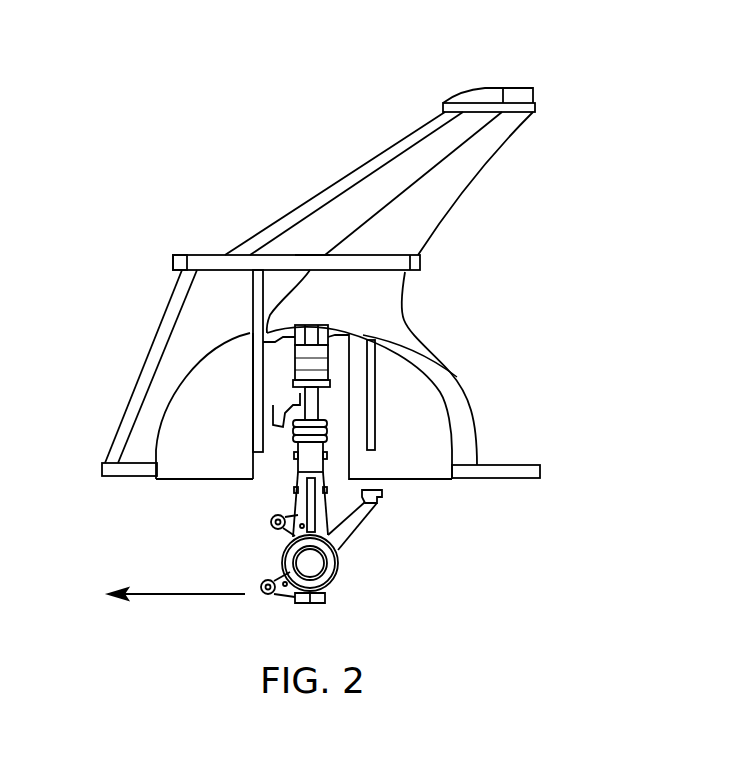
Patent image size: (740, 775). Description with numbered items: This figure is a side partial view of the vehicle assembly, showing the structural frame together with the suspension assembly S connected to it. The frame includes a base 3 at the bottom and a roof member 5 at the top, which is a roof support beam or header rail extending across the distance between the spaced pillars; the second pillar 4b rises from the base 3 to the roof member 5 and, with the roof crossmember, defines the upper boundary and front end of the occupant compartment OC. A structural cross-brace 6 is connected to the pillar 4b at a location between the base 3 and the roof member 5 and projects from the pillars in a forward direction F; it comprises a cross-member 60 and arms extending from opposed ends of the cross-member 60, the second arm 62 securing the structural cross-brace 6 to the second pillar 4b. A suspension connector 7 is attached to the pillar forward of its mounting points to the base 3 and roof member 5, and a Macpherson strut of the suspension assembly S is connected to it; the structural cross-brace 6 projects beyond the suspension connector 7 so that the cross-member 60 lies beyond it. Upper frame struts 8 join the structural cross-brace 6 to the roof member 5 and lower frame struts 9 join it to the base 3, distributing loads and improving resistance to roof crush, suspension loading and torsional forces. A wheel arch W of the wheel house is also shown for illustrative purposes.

The base 3 is at (540, 470).
The roof member 5 is at (520, 90).
The structural cross-brace 6 is at (422, 265).
The suspension connector 7 is at (457, 377).
The upper frame strut 8 is at (375, 158).
The lower frame strut 9 is at (153, 360).
The cross-member 60 is at (185, 255).
The second arm 62 is at (310, 253).
The second pillar 4b is at (423, 226).
The occupant compartment OC is at (519, 241).
The wheel arch W is at (414, 449).
The suspension assembly S is at (300, 393).
The forward direction F is at (176, 608).